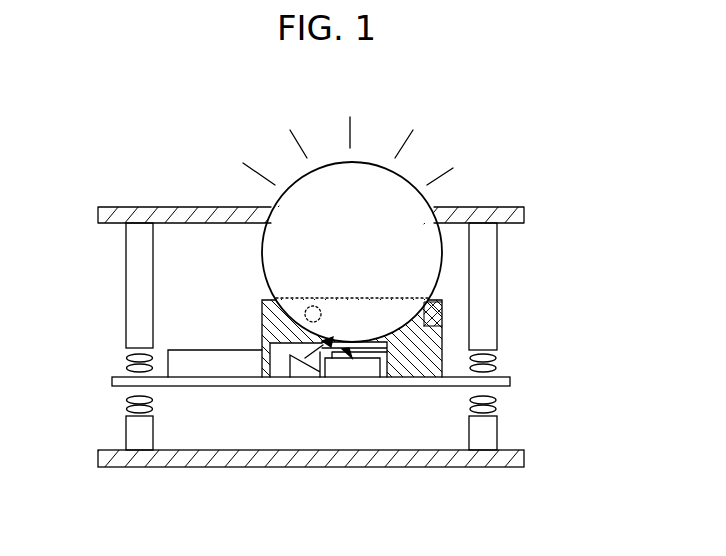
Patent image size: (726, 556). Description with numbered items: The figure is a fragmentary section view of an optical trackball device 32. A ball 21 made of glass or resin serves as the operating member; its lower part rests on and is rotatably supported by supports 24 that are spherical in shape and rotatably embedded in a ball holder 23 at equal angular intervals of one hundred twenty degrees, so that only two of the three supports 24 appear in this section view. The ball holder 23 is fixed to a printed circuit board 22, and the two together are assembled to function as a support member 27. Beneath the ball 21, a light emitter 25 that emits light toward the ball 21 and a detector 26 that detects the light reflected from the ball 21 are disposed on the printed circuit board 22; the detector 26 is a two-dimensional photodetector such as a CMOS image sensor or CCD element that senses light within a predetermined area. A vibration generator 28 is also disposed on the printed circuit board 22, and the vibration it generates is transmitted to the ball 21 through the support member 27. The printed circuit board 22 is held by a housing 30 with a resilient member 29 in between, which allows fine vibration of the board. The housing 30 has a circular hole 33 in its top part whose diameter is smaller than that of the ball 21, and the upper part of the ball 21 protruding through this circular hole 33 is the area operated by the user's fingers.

The ball 21 is at (432, 245).
The printed circuit board 22 is at (503, 381).
The ball holder 23 is at (430, 342).
The supports 24 is at (312, 313).
The light emitter 25 is at (307, 367).
The detector 26 is at (353, 368).
The support member 27 is at (350, 312).
The vibration generator 28 is at (218, 363).
The resilient member 29 is at (126, 403).
The housing 30 is at (127, 213).
The optical trackball device 32 is at (502, 137).
The circular hole 33 is at (272, 207).